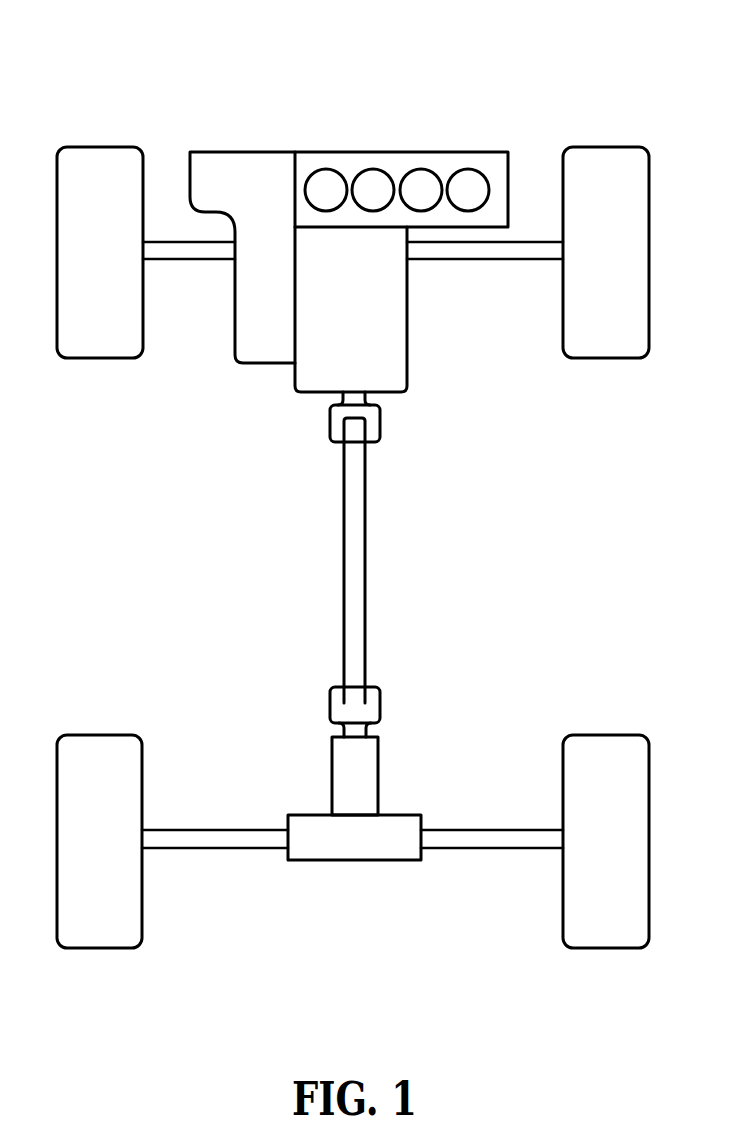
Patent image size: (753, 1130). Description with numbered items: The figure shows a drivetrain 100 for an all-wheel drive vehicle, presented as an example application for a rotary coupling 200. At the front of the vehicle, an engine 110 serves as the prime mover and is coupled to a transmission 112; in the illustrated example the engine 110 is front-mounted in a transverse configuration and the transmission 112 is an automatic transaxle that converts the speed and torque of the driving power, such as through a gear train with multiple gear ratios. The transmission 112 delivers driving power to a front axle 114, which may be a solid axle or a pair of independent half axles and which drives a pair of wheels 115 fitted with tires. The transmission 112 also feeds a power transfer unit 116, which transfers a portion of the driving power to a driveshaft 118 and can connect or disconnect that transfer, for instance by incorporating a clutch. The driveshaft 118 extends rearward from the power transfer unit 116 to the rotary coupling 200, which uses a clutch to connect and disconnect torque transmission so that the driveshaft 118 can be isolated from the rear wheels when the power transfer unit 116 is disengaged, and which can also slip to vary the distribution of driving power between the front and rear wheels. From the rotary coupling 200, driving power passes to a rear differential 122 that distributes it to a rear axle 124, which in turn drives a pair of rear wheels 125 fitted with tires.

The drivetrain 100 is at (146, 52).
The engine 110 is at (473, 152).
The transmission 112 is at (250, 152).
The front axle 114 is at (172, 259).
The wheels 115 is at (88, 147).
The power transfer unit 116 is at (408, 363).
The driveshaft 118 is at (366, 548).
The rear differential 122 is at (327, 860).
The rear axle 124 is at (178, 848).
The rear wheels 125 is at (102, 735).
The rotary coupling 200 is at (378, 755).